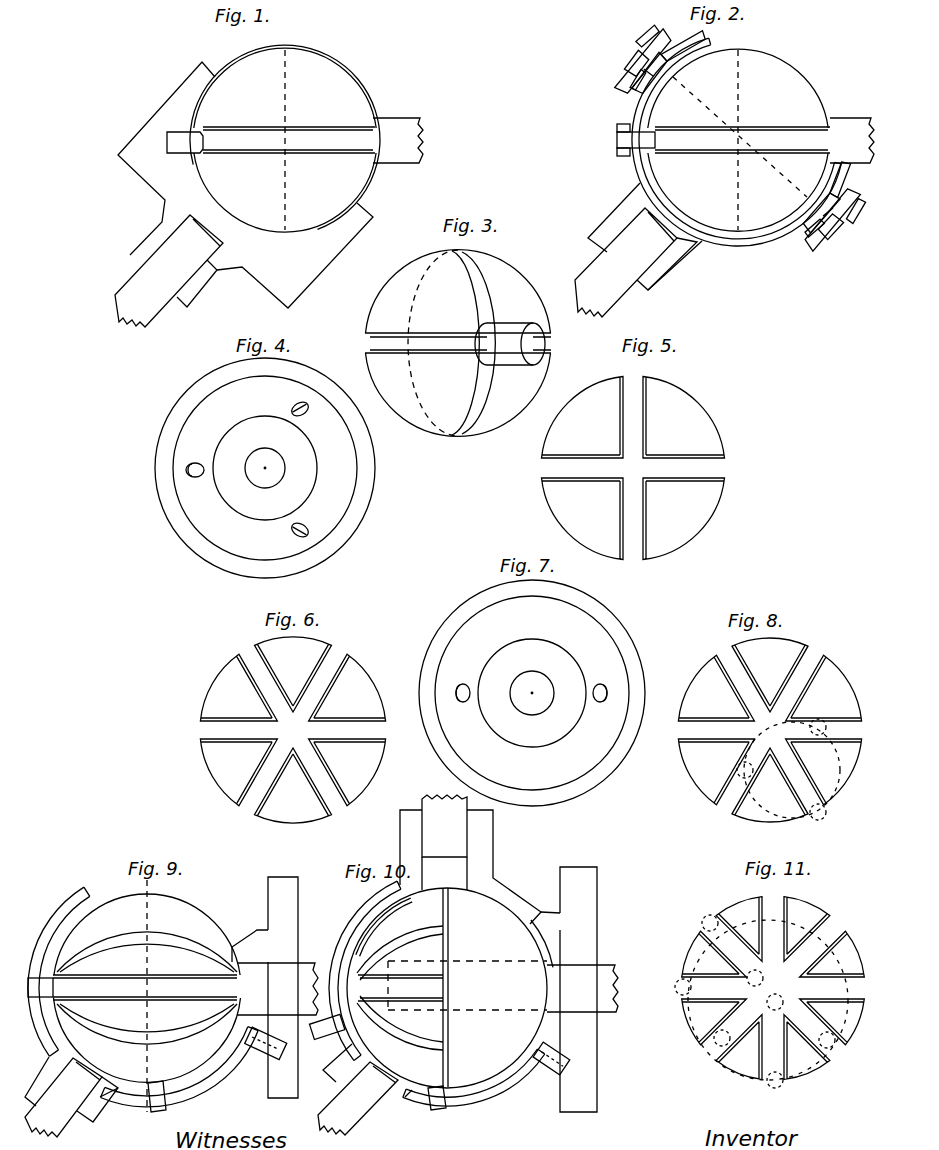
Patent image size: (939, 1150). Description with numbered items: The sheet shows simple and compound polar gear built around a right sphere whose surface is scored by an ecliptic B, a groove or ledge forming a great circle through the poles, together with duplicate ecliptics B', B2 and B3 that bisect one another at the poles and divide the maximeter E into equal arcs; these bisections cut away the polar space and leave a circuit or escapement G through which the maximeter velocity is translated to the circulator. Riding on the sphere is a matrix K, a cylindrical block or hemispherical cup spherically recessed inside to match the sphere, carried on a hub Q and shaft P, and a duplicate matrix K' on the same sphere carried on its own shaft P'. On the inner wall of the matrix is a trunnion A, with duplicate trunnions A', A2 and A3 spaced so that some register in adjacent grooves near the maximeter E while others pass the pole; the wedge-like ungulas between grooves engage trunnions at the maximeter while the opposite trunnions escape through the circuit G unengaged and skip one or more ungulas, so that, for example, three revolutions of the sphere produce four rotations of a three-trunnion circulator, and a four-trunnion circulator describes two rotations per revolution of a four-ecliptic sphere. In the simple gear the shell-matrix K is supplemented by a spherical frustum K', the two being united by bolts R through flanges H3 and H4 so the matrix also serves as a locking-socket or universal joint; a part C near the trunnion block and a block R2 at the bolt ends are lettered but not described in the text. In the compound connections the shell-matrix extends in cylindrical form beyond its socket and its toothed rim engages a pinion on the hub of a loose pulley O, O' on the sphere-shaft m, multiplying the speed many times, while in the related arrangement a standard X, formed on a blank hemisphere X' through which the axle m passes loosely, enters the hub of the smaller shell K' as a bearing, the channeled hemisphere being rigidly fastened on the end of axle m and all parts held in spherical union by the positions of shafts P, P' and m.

In FIG. 1, the trunnion A is at (185, 142).
In FIG. 2, the trunnion A is at (636, 140).
In FIG. 4, the trunnion A is at (195, 463).
In FIG. 7, the trunnion A is at (463, 684).
In FIG. 8, the trunnion A is at (747, 762).
In FIG. 9, the trunnion A is at (40, 987).
In FIG. 10, the trunnion A is at (326, 1027).
In FIG. 11, the trunnion A is at (738, 958).
In FIG. 4, the duplicate trunnion A' is at (306, 409).
In FIG. 7, the duplicate trunnion A' is at (601, 684).
In FIG. 8, the duplicate trunnion A' is at (810, 728).
In FIG. 9, the duplicate trunnion A' is at (157, 1104).
In FIG. 10, the duplicate trunnion A' is at (437, 1105).
In FIG. 11, the duplicate trunnion A' is at (741, 1002).
In FIG. 4, the duplicate trunnion A2 is at (307, 527).
In FIG. 8, the duplicate trunnion A2 is at (826, 812).
In FIG. 11, the duplicate trunnion A2 is at (721, 1042).
In FIG. 11, the duplicate trunnion A3 is at (834, 1047).
In FIG. 1, the ecliptic B is at (289, 140).
In FIG. 2, the ecliptic B is at (742, 140).
In FIG. 3, the ecliptic B is at (462, 343).
In FIG. 5, the ecliptic B is at (633, 468).
In FIG. 6, the ecliptic B is at (292, 730).
In FIG. 8, the ecliptic B is at (769, 730).
In FIG. 9, the ecliptic B is at (145, 987).
In FIG. 10, the ecliptic B is at (400, 988).
In FIG. 11, the ecliptic B is at (773, 988).
In FIG. 3, the duplicate ecliptic B' is at (470, 343).
In FIG. 5, the duplicate ecliptic B' is at (632, 415).
In FIG. 6, the duplicate ecliptic B' is at (292, 733).
In FIG. 8, the duplicate ecliptic B' is at (771, 735).
In FIG. 9, the duplicate ecliptic B' is at (147, 1024).
In FIG. 10, the duplicate ecliptic B' is at (400, 1023).
In FIG. 11, the duplicate ecliptic B' is at (787, 982).
In FIG. 6, the duplicate ecliptic B2 is at (293, 728).
In FIG. 8, the duplicate ecliptic B2 is at (773, 728).
In FIG. 9, the duplicate ecliptic B2 is at (147, 950).
In FIG. 10, the duplicate ecliptic B2 is at (400, 953).
In FIG. 11, the duplicate ecliptic B2 is at (770, 980).
In FIG. 11, the duplicate ecliptic B3 is at (773, 981).
In FIG. 2, the clamp flange C is at (621, 128).
In FIG. 1, the maximeter E is at (285, 138).
In FIG. 2, the maximeter E is at (738, 140).
In FIG. 3, the maximeter E is at (458, 343).
In FIG. 9, the maximeter E is at (147, 996).
In FIG. 10, the maximeter E is at (447, 988).
In FIG. 5, the circuit G is at (633, 468).
In FIG. 6, the circuit G is at (292, 727).
In FIG. 8, the circuit G is at (756, 720).
In FIG. 9, the circuit G is at (61, 988).
In FIG. 10, the circuit G is at (354, 989).
In FIG. 11, the circuit G is at (772, 983).
In FIG. 2, the flange H3 is at (727, 136).
In FIG. 2, the flange H4 is at (751, 142).
In FIG. 1, the matrix K is at (245, 185).
In FIG. 2, the matrix K is at (714, 164).
In FIG. 7, the matrix K is at (532, 693).
In FIG. 9, the matrix K is at (141, 997).
In FIG. 10, the matrix K is at (434, 993).
In FIG. 2, the duplicate matrix K' is at (756, 114).
In FIG. 10, the duplicate matrix K' is at (384, 914).
In FIG. 1, the sphere-shaft m is at (398, 140).
In FIG. 2, the sphere-shaft m is at (852, 140).
In FIG. 3, the sphere-shaft m is at (510, 344).
In FIG. 9, the sphere-shaft m is at (277, 989).
In FIG. 10, the sphere-shaft m is at (503, 987).
In FIG. 9, the loose pulley O is at (283, 987).
In FIG. 10, the loose pulley O is at (578, 989).
In FIG. 9, the loose pulley O' is at (259, 995).
In FIG. 10, the loose pulley O' is at (551, 993).
In FIG. 1, the matrix shaft P is at (169, 271).
In FIG. 2, the matrix shaft P is at (626, 262).
In FIG. 7, the matrix shaft P is at (532, 693).
In FIG. 9, the matrix shaft P is at (63, 1097).
In FIG. 10, the matrix shaft P is at (444, 826).
In FIG. 10, the matrix shaft P' is at (358, 1098).
In FIG. 1, the matrix hub Q is at (197, 283).
In FIG. 2, the matrix hub Q is at (672, 264).
In FIG. 9, the matrix hub Q is at (97, 1099).
In FIG. 10, the matrix hub Q is at (476, 888).
In FIG. 2, the bolt R is at (740, 135).
In FIG. 2, the adjusting bar block R2 is at (728, 163).
In FIG. 10, the standard X is at (444, 972).
In FIG. 10, the blank hemisphere X' is at (485, 932).